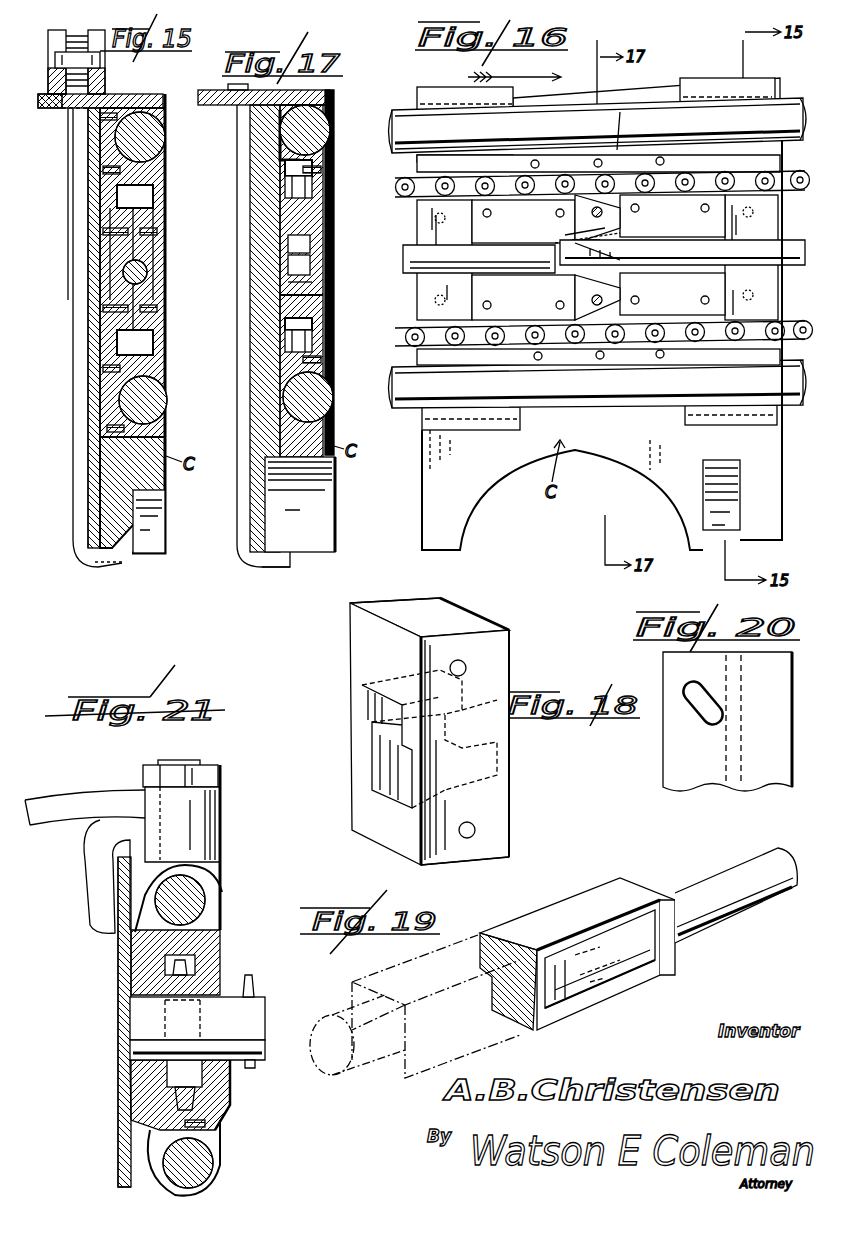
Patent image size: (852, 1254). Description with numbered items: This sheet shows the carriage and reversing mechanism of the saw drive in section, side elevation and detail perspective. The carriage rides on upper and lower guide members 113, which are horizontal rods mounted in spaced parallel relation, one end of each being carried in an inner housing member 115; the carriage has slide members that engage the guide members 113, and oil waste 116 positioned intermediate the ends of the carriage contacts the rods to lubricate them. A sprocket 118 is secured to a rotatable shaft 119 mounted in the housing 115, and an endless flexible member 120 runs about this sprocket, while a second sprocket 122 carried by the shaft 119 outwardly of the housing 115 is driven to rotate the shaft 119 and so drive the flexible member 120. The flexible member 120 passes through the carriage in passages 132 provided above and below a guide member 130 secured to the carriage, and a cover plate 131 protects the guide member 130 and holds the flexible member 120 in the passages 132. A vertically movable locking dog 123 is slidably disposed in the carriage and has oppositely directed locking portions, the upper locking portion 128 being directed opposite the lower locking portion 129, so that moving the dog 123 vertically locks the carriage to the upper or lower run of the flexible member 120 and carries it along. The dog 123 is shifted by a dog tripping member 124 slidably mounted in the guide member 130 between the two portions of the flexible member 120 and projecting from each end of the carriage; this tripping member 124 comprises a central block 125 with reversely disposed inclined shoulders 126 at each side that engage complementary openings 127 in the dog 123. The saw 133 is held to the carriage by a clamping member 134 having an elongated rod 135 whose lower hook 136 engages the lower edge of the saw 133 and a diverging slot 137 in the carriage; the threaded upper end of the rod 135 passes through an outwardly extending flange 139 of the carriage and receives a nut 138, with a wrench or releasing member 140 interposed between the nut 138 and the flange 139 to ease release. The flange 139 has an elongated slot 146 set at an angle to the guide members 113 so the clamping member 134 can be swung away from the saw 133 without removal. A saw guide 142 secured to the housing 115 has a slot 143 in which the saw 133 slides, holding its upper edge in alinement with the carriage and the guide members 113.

In FIG. 15, the guide members 113 is at (162, 143).
In FIG. 17, the guide members 113 is at (330, 130).
In FIG. 16, the guide members 113 is at (620, 430).
In FIG. 21, the guide members 113 is at (195, 903).
In FIG. 15, the inner housing member 115 is at (160, 115).
In FIG. 16, the inner housing member 115 is at (445, 103).
In FIG. 21, the inner housing member 115 is at (236, 1108).
In FIG. 17, the oil waste 116 is at (324, 105).
In FIG. 21, the sprocket 118 is at (148, 1005).
In FIG. 16, the rotatable shaft 119 is at (708, 108).
In FIG. 21, the rotatable shaft 119 is at (256, 995).
In FIG. 17, the endless flexible member 120 is at (328, 190).
In FIG. 16, the endless flexible member 120 is at (380, 346).
In FIG. 21, the sprocket 122 is at (256, 1065).
In FIG. 17, the locking dog 123 is at (285, 222).
In FIG. 16, the locking dog 123 is at (628, 217).
In FIG. 18, the locking dog 123 is at (352, 657).
In FIG. 15, the dog tripping member 124 is at (147, 275).
In FIG. 16, the dog tripping member 124 is at (396, 269).
In FIG. 19, the dog tripping member 124 is at (725, 873).
In FIG. 17, the central block 125 is at (306, 274).
In FIG. 16, the central block 125 is at (660, 246).
In FIG. 19, the central block 125 is at (553, 910).
In FIG. 17, the inclined shoulders 126 is at (312, 250).
In FIG. 16, the inclined shoulders 126 is at (628, 270).
In FIG. 19, the inclined shoulders 126 is at (608, 978).
In FIG. 16, the openings 127 is at (570, 230).
In FIG. 18, the openings 127 is at (506, 673).
In FIG. 18, the upper locking portion 128 is at (425, 603).
In FIG. 18, the lower locking portion 129 is at (480, 860).
In FIG. 15, the guide member 130 is at (165, 252).
In FIG. 16, the guide member 130 is at (470, 284).
In FIG. 15, the cover plate 131 is at (160, 200).
In FIG. 17, the cover plate 131 is at (326, 296).
In FIG. 15, the passages 132 is at (118, 199).
In FIG. 17, the passages 132 is at (282, 166).
In FIG. 16, the passages 132 is at (622, 165).
In FIG. 15, the saw 133 is at (98, 415).
In FIG. 17, the saw 133 is at (262, 428).
In FIG. 21, the saw 133 is at (125, 1137).
In FIG. 15, the clamping member 134 is at (80, 462).
In FIG. 17, the clamping member 134 is at (242, 371).
In FIG. 15, the elongated rod 135 is at (73, 300).
In FIG. 15, the hook 136 is at (112, 566).
In FIG. 17, the hook 136 is at (278, 568).
In FIG. 15, the diverging slot 137 is at (168, 508).
In FIG. 16, the diverging slot 137 is at (730, 490).
In FIG. 15, the nut 138 is at (60, 58).
In FIG. 15, the flange 139 is at (48, 108).
In FIG. 17, the flange 139 is at (208, 90).
In FIG. 20, the flange 139 is at (684, 772).
In FIG. 15, the wrench or releasing member 140 is at (108, 86).
In FIG. 21, the saw guide 142 is at (222, 868).
In FIG. 21, the slot 143 is at (118, 935).
In FIG. 20, the elongated slot 146 is at (697, 718).